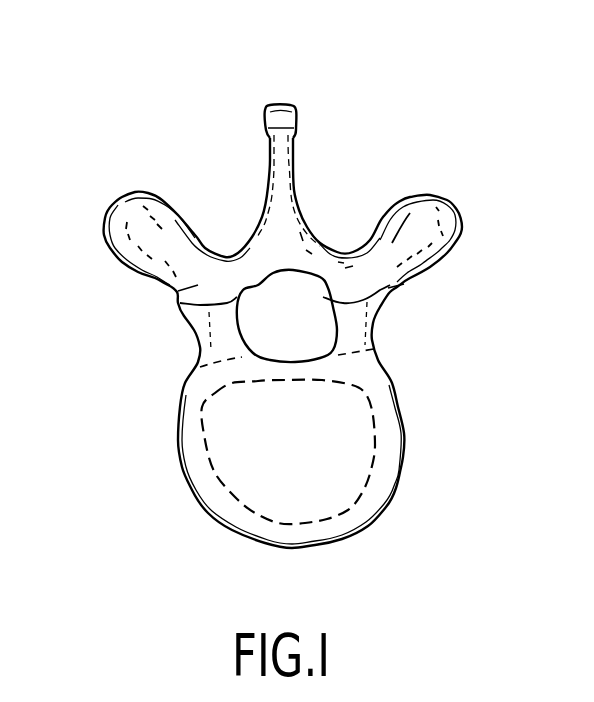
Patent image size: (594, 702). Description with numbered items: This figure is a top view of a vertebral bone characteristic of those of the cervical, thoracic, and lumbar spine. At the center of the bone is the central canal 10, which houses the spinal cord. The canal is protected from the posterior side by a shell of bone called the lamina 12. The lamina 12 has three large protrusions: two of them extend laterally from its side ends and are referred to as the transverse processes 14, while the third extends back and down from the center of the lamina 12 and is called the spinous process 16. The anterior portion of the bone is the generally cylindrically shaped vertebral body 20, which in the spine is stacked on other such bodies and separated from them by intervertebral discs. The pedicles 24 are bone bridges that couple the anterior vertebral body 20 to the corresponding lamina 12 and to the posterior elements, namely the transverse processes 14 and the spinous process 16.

The central canal 10 is at (303, 334).
The lamina 12 is at (361, 156).
The transverse process 14 is at (120, 199).
The spinous process 16 is at (283, 103).
The vertebral body 20 is at (320, 463).
The pedicle 24 is at (213, 333).